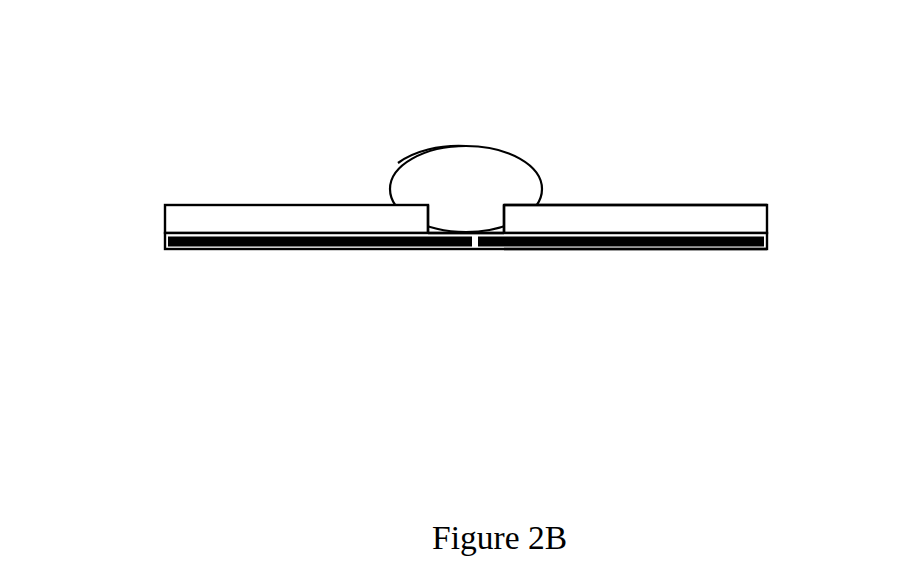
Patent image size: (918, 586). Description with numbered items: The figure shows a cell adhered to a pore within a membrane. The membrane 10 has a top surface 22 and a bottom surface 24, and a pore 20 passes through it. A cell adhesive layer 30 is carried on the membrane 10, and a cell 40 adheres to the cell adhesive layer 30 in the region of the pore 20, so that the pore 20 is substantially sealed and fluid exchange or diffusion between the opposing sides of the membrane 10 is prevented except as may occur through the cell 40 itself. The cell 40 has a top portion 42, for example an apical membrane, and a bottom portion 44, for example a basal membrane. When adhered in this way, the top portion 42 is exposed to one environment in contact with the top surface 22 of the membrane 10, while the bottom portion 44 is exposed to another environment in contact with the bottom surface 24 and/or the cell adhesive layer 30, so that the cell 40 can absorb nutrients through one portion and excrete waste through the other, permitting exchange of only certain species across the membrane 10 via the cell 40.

The membrane 10 is at (752, 219).
The pore 20 is at (447, 218).
The top surface 22 is at (657, 173).
The bottom surface 24 is at (662, 278).
The cell adhesive layer 30 is at (165, 246).
The cell 40 is at (463, 118).
The top portion 42 is at (398, 163).
The bottom portion 44 is at (473, 238).